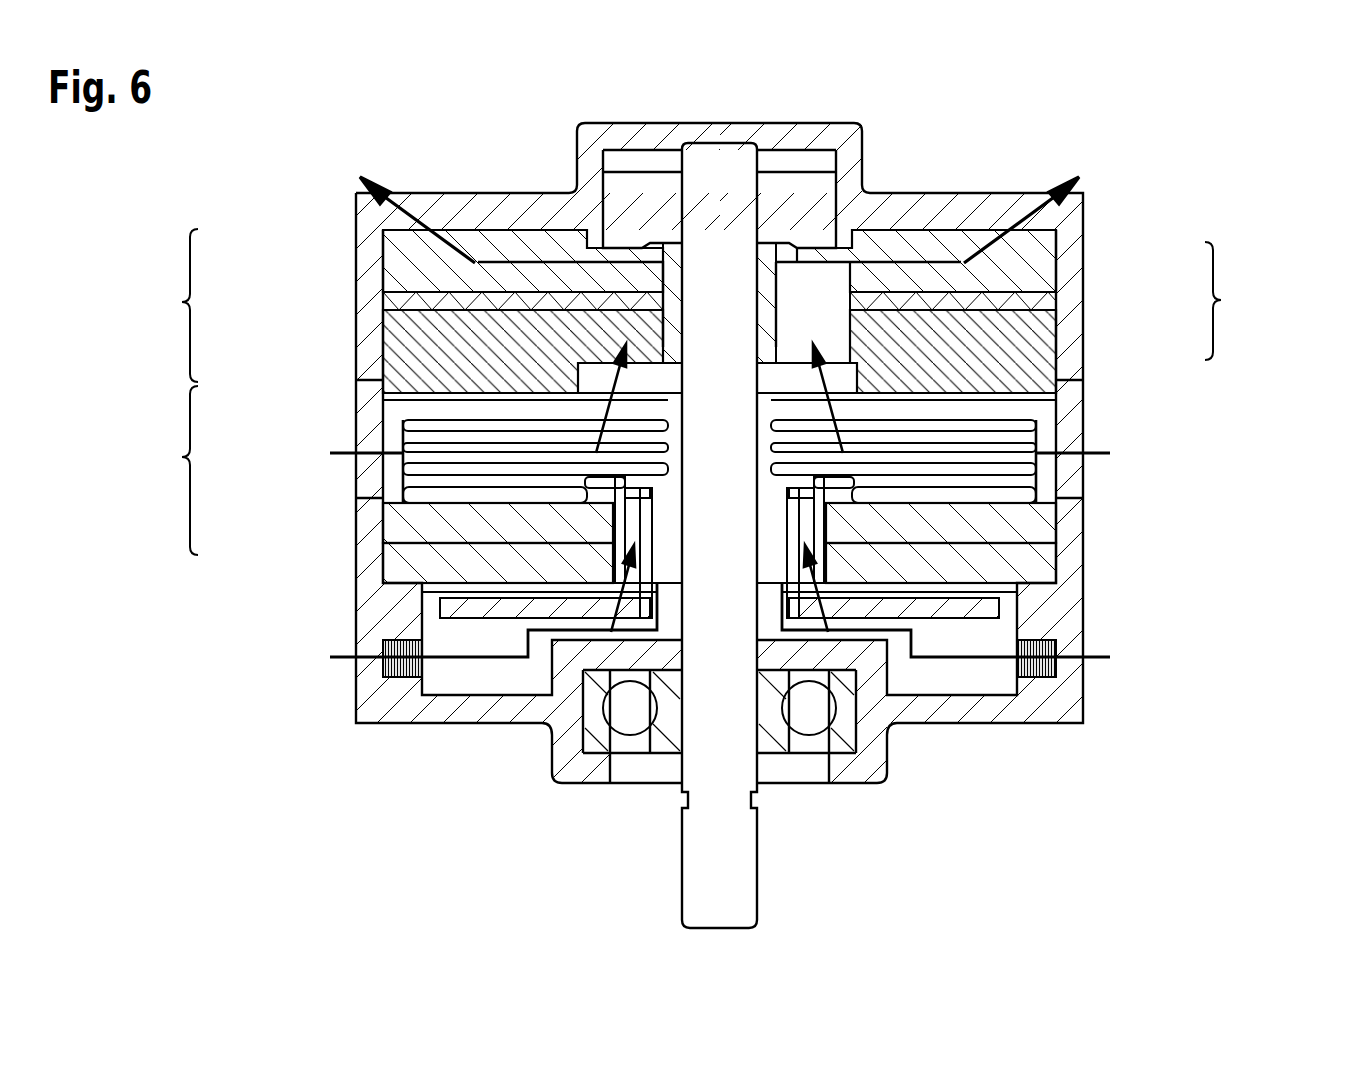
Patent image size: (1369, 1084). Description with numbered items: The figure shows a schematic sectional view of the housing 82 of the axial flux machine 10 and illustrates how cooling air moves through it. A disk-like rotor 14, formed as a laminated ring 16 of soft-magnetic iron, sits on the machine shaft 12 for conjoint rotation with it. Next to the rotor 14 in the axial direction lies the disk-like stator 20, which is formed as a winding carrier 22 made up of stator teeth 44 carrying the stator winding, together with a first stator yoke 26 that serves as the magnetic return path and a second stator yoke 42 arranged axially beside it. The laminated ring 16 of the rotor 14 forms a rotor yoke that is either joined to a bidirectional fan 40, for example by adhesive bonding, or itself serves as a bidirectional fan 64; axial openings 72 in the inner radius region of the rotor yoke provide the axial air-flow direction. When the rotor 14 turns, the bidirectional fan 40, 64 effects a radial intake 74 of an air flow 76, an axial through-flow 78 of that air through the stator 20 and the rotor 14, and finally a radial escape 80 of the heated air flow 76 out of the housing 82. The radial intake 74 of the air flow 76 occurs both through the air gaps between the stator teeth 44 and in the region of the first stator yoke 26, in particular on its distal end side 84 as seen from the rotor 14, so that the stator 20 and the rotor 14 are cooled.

The axial flux machine 10 is at (1280, 138).
The machine shaft 12 is at (733, 888).
The rotor 14 is at (169, 305).
The laminated ring 16 is at (1030, 337).
The stator 20 is at (169, 470).
The winding carrier 22 is at (1030, 440).
The first stator yoke 26 is at (1030, 563).
The bidirectional fan 40 is at (1030, 270).
The second stator yoke 42 is at (1030, 528).
The stator teeth 44 is at (1030, 497).
The bidirectional fan 64 is at (1234, 301).
The axial openings 72 is at (808, 292).
The radial intake 74 is at (330, 453).
The air flow 76 is at (497, 265).
The axial through-flow 78 is at (617, 360).
The radial escape 80 is at (372, 183).
The housing 82 is at (437, 215).
The distal end side 84 is at (893, 600).